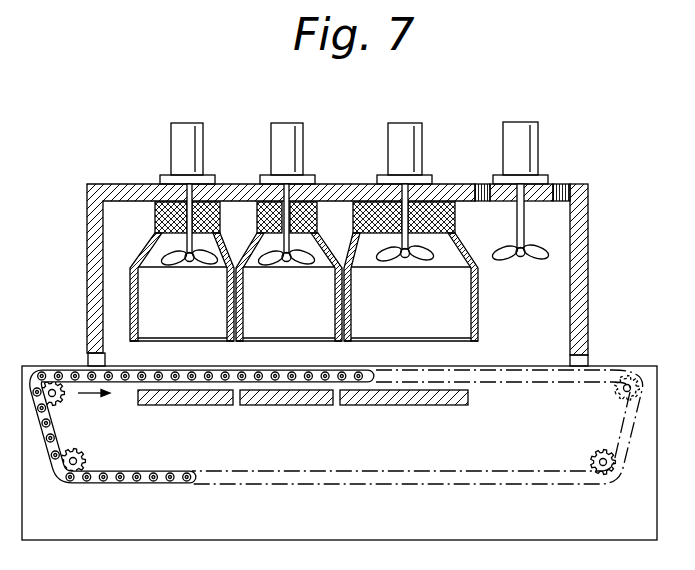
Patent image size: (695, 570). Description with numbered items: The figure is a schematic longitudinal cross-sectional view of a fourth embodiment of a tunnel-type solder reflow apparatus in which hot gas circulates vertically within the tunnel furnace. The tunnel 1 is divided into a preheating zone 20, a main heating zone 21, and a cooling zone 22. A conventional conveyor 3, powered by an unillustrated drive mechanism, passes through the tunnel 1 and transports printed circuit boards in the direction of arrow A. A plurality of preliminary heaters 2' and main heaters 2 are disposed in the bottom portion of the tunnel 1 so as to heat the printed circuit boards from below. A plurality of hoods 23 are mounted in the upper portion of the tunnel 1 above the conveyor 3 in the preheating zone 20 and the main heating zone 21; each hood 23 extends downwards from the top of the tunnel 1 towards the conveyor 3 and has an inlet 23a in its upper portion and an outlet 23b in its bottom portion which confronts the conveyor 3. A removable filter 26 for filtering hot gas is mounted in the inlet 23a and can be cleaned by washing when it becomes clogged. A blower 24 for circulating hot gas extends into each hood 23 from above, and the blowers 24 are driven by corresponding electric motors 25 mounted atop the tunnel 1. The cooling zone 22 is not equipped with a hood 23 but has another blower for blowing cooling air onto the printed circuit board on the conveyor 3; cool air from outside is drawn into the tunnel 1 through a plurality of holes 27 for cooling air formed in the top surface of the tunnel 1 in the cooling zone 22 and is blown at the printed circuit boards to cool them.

The tunnel 1 is at (316, 363).
The main heaters 2 is at (404, 418).
The preliminary heaters 2' is at (235, 418).
The conveyor 3 is at (57, 425).
The preheating zone 20 is at (105, 123).
The main heating zone 21 is at (462, 123).
The cooling zone 22 is at (570, 123).
The hood 23 is at (141, 318).
The inlet 23a is at (237, 214).
The outlet 23b is at (198, 340).
The blower 24 is at (200, 265).
The electric motors 25 is at (388, 152).
The filter 26 is at (157, 214).
The holes for cooling air 27 is at (557, 201).
The arrow A is at (103, 395).